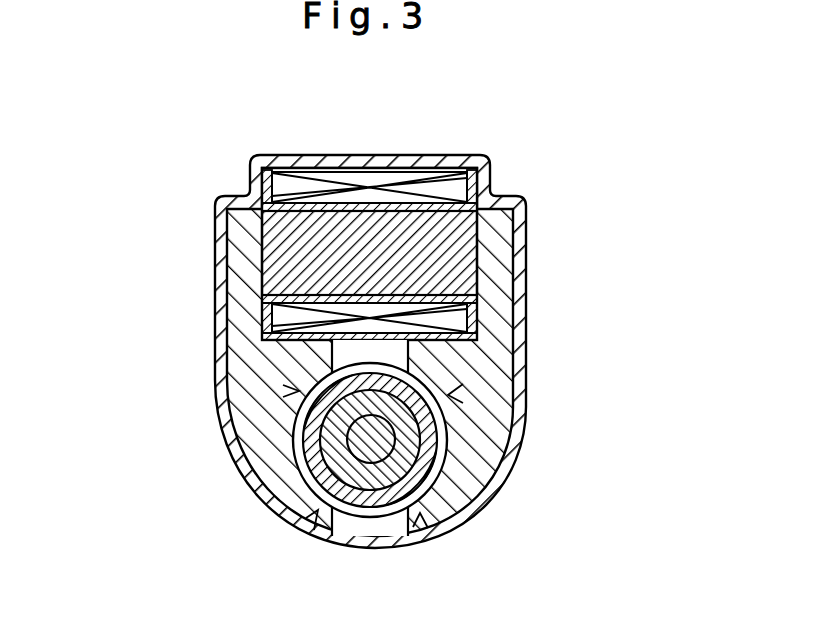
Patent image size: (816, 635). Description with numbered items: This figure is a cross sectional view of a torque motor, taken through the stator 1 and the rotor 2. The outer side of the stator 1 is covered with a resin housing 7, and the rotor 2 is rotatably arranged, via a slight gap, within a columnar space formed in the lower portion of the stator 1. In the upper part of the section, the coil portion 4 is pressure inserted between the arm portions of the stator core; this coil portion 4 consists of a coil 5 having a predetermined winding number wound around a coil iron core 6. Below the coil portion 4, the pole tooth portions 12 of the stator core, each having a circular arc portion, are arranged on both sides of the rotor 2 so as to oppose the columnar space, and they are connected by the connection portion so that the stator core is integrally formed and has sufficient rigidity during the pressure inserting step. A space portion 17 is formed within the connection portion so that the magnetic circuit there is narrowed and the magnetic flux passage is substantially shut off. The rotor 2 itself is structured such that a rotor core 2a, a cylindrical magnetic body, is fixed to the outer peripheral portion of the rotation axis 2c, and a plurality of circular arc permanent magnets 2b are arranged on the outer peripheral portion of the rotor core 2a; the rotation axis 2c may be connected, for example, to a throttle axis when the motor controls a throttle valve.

The stator 1 is at (498, 180).
The rotor 2 is at (437, 440).
The rotor core 2a is at (354, 442).
The circular arc permanent magnets 2b is at (320, 428).
The rotation axis 2c is at (342, 482).
The coil portion 4 is at (382, 181).
The coil 5 is at (310, 188).
The coil iron core 6 is at (292, 250).
The resin housing 7 is at (220, 340).
The pole tooth portions 12 is at (299, 391).
The space portion 17 is at (380, 352).